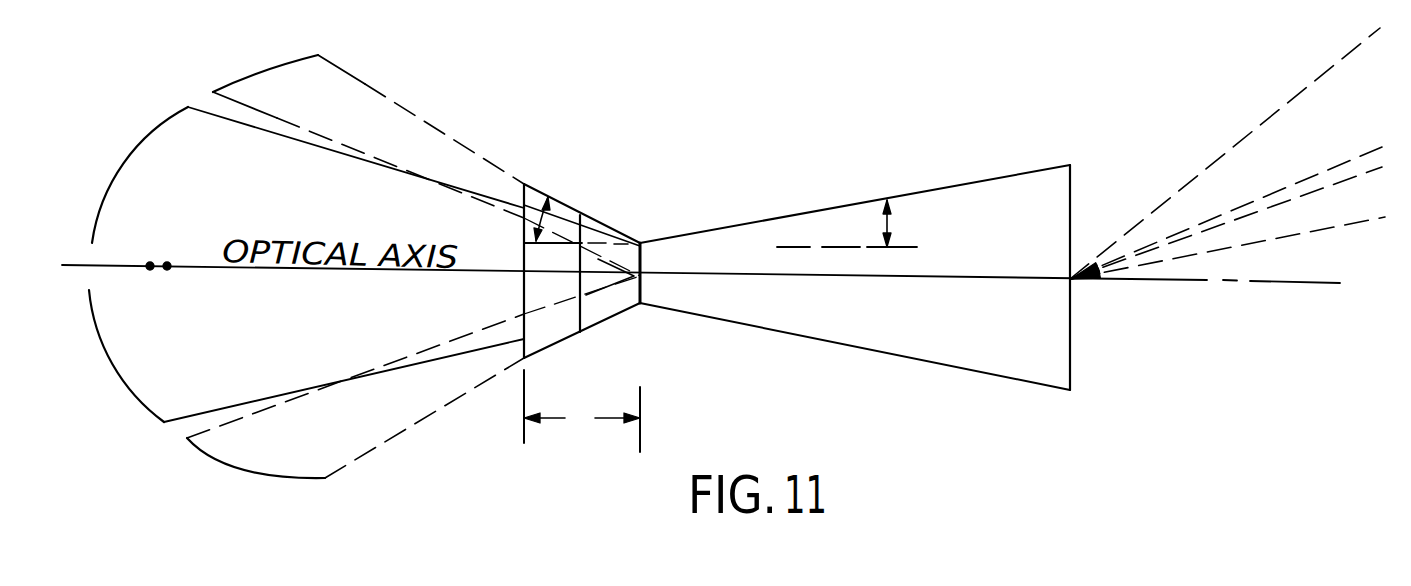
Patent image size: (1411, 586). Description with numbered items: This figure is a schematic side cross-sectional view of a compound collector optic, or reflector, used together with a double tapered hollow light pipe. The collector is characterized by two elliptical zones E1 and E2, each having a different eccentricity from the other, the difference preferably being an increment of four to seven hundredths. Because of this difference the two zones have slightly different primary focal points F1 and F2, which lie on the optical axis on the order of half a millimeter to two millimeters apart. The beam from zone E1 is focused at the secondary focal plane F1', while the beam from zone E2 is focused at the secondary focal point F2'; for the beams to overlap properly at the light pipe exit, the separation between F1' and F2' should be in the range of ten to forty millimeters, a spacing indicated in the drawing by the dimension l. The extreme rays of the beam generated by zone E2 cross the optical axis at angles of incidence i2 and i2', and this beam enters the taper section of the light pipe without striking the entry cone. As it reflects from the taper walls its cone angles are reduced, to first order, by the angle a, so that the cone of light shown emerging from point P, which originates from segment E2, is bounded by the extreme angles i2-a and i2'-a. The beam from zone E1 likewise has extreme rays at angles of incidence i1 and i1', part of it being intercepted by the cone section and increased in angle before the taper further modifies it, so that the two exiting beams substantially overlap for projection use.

The elliptical zone E1 is at (306, 271).
The elliptical zone E2 is at (355, 274).
The angle of incidence i1 is at (117, 230).
The angle of incidence i1' is at (172, 142).
The angle of incidence i2 is at (259, 90).
The angle of incidence i2' is at (319, 90).
The primary focal point of zone E1 F1 is at (142, 292).
The primary focal point of zone E2 F2 is at (174, 292).
The secondary focal plane F1' is at (597, 247).
The secondary focal point F2' is at (659, 249).
The distance l between lens planes l is at (582, 411).
The angle a is at (847, 223).
The point P is at (1088, 277).
The angle i2'-a is at (1234, 223).
The angle i2-a is at (1304, 235).